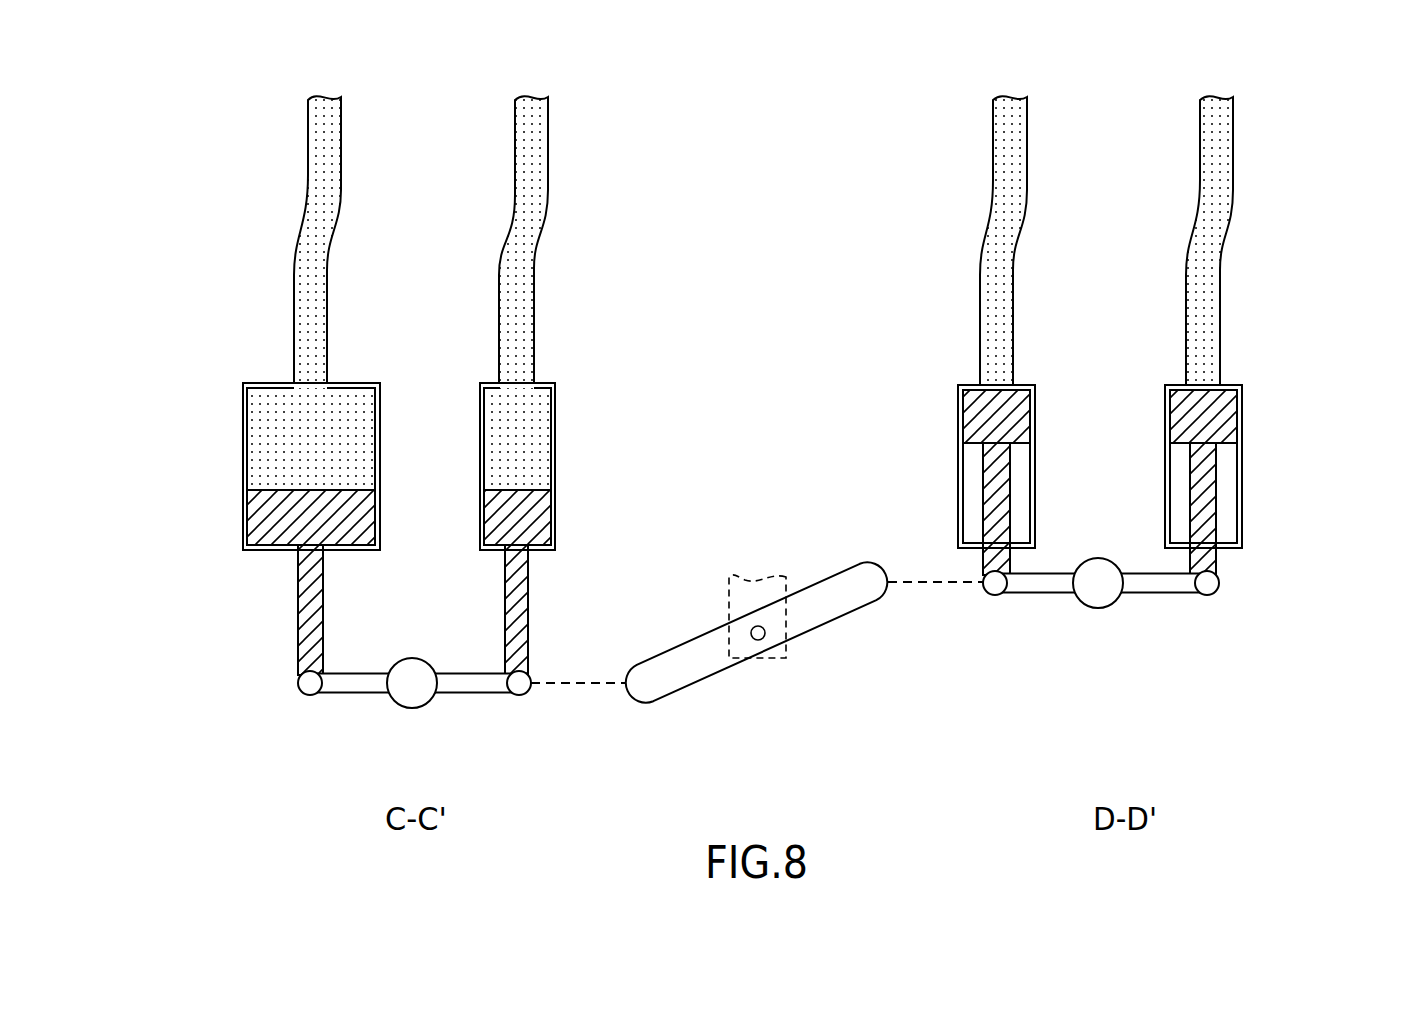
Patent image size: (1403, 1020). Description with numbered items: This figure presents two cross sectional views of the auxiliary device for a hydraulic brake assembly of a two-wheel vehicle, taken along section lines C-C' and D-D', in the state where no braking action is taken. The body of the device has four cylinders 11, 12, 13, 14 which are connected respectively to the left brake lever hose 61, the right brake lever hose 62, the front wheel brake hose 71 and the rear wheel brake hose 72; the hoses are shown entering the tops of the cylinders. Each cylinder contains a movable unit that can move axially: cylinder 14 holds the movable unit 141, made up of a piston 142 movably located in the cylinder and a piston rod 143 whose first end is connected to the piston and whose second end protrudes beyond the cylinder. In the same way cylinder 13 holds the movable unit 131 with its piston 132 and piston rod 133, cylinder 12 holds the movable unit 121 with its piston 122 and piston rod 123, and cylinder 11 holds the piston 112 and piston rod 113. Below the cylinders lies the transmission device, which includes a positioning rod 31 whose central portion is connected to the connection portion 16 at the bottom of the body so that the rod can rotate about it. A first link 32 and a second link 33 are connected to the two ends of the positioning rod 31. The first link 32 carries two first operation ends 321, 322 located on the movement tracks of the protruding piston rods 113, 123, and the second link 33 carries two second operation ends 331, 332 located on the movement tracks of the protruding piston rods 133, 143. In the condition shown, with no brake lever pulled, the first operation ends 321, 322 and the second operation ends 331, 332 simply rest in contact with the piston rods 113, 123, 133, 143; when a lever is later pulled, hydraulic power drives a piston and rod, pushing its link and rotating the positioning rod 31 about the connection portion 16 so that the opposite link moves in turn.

The rear wheel brake hose 72 is at (308, 173).
The front wheel brake hose 71 is at (548, 157).
The right brake lever hose 62 is at (993, 173).
The left brake lever hose 61 is at (1233, 157).
The cylinder 14 is at (243, 408).
The cylinder 13 is at (555, 408).
The cylinder 12 is at (958, 408).
The cylinder 11 is at (1242, 408).
The movable unit 141 is at (231, 582).
The piston 142 is at (283, 505).
The piston rod 143 is at (298, 637).
The movable unit 131 is at (598, 582).
The piston 132 is at (540, 504).
The piston rod 133 is at (530, 637).
The movable unit 121 is at (904, 482).
The piston 122 is at (972, 428).
The piston rod 123 is at (988, 518).
The piston 112 is at (1230, 422).
The piston rod 113 is at (1213, 520).
The connection portion 16 is at (763, 595).
The positioning rod 31 is at (412, 703).
The second link 33 is at (467, 690).
The second operation end 332 is at (308, 690).
The second operation end 331 is at (520, 695).
The first link 32 is at (1153, 592).
The first operation end 322 is at (994, 592).
The first operation end 321 is at (1205, 595).